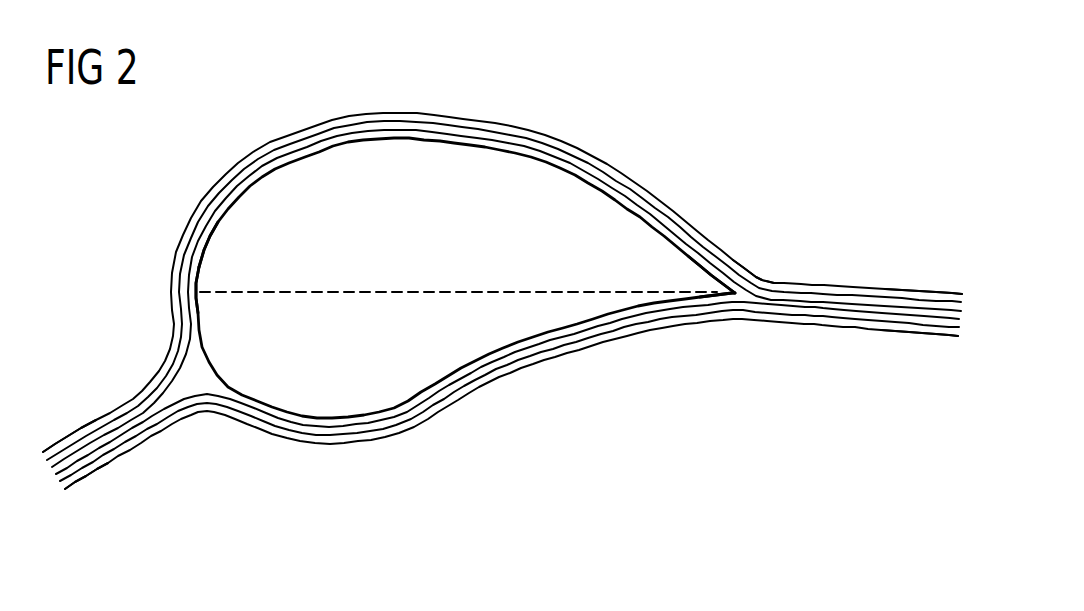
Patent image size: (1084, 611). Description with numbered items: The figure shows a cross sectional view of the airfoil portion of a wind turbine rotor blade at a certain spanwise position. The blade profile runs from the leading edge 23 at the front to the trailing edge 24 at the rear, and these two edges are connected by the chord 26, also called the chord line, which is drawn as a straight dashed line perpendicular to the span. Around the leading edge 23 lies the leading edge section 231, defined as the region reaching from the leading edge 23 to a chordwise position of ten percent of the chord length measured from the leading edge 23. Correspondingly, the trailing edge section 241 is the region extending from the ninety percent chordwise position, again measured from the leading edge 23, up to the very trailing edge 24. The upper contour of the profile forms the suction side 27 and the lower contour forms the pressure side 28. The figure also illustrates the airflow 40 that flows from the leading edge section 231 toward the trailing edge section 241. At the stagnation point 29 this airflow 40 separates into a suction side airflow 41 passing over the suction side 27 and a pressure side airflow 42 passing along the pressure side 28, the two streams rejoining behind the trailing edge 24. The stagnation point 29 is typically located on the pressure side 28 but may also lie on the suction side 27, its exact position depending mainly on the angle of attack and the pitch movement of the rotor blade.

The leading edge 23 is at (196, 292).
The leading edge section 231 is at (206, 262).
The trailing edge 24 is at (741, 292).
The trailing edge section 241 is at (704, 276).
The chord 26 is at (567, 291).
The suction side 27 is at (540, 160).
The pressure side 28 is at (400, 410).
The stagnation point 29 is at (215, 370).
The airflow 40 is at (88, 400).
The suction side airflow 41 is at (255, 158).
The pressure side airflow 42 is at (497, 386).